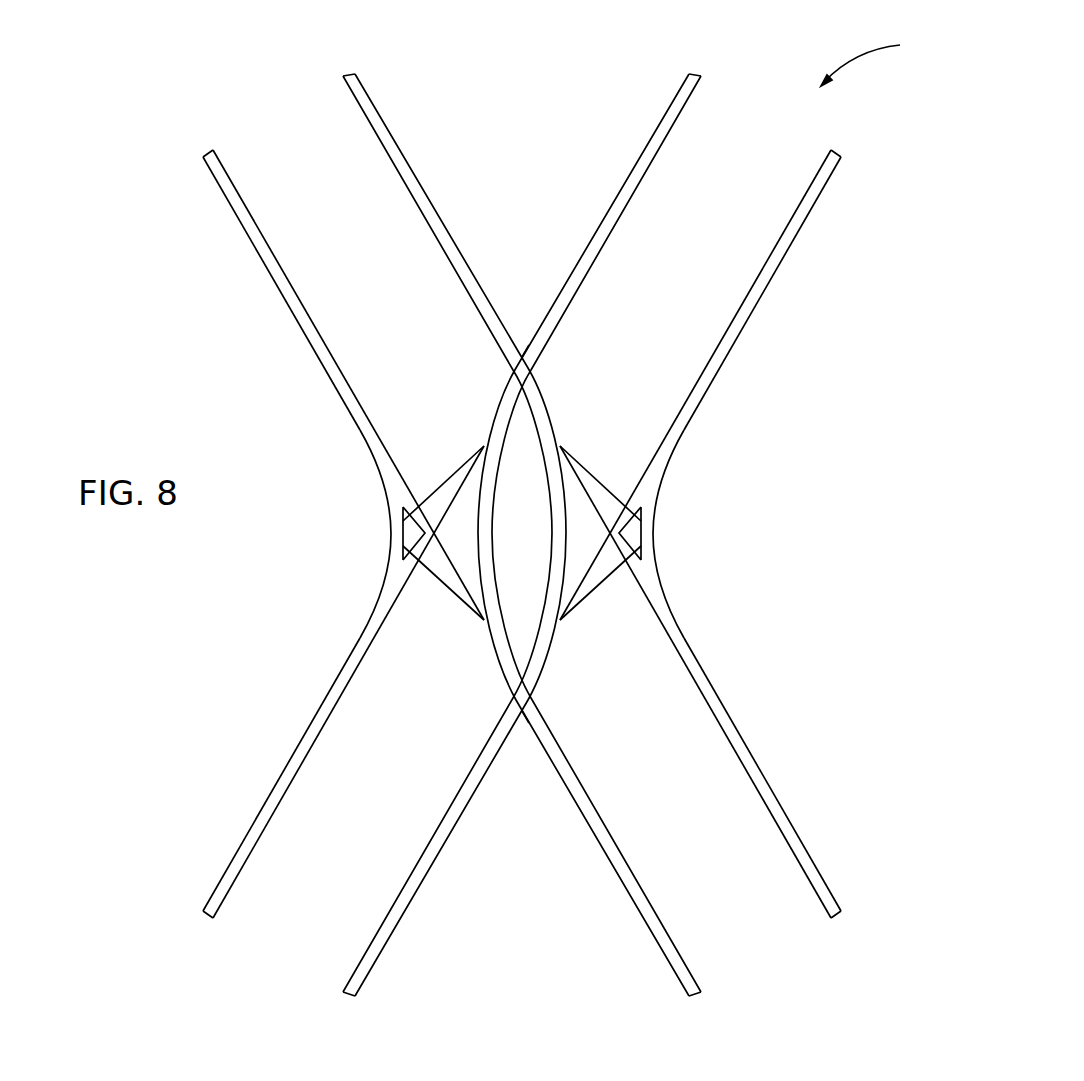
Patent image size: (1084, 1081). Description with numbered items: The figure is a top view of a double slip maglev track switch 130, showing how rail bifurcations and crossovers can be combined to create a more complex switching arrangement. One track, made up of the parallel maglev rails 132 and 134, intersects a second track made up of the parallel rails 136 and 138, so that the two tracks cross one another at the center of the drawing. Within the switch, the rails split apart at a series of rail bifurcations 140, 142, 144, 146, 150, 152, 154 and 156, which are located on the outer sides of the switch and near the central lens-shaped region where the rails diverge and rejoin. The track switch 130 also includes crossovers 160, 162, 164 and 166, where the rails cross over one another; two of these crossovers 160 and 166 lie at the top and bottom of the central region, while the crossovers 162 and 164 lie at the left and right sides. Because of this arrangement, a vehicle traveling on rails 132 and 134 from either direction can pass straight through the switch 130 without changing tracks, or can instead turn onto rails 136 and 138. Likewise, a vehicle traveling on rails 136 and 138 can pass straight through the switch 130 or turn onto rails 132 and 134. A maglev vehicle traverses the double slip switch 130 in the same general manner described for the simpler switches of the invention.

The double slip maglev track switch 130 is at (888, 58).
The maglev rail 132 is at (206, 152).
The maglev rail 134 is at (345, 73).
The rail 136 is at (699, 73).
The rail 138 is at (838, 152).
The rail bifurcation 140 is at (392, 483).
The rail bifurcation 142 is at (392, 585).
The rail bifurcation 144 is at (490, 433).
The rail bifurcation 146 is at (490, 635).
The rail bifurcation 150 is at (652, 483).
The rail bifurcation 152 is at (652, 585).
The rail bifurcation 154 is at (554, 433).
The rail bifurcation 156 is at (554, 635).
The crossover 160 is at (522, 352).
The crossover 162 is at (425, 533).
The crossover 164 is at (619, 533).
The crossover 166 is at (522, 714).